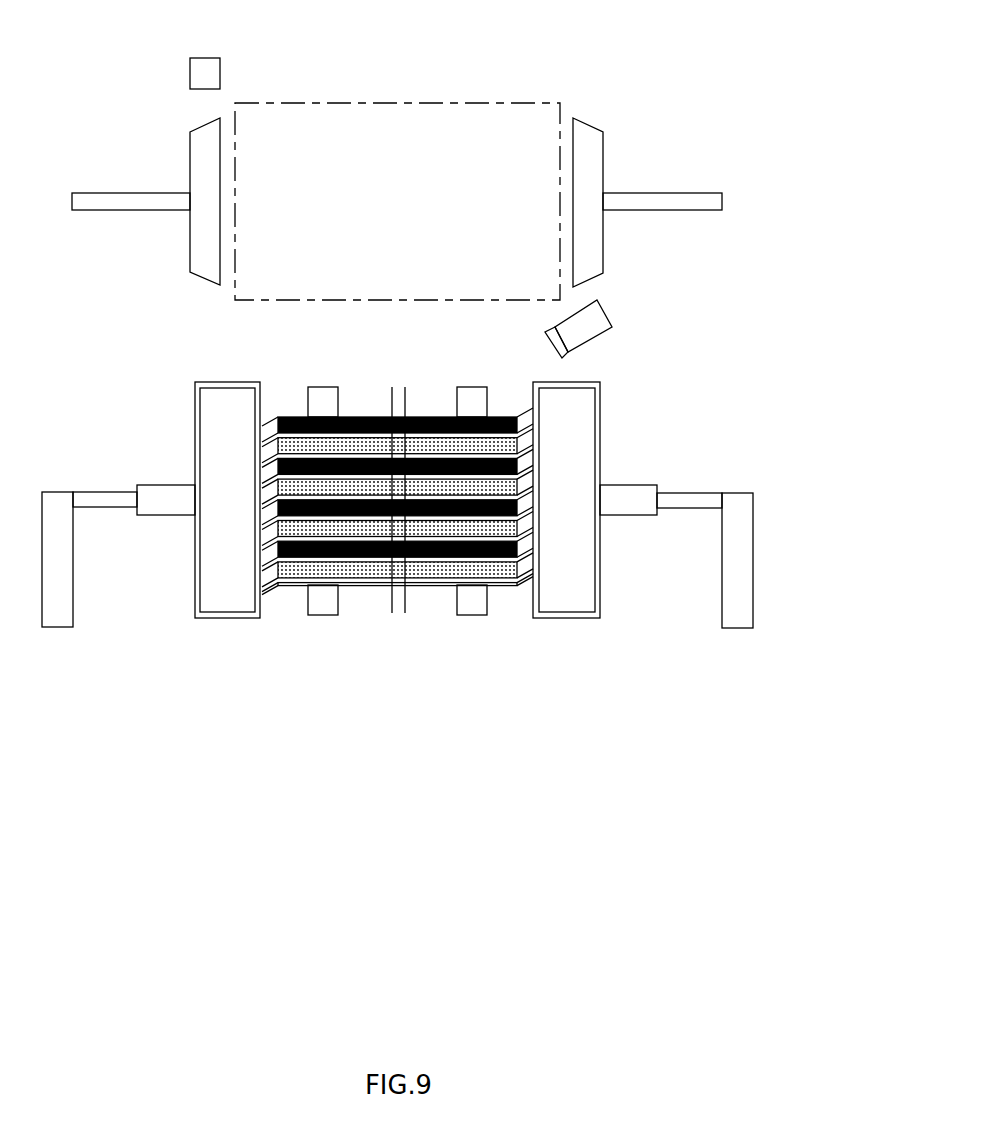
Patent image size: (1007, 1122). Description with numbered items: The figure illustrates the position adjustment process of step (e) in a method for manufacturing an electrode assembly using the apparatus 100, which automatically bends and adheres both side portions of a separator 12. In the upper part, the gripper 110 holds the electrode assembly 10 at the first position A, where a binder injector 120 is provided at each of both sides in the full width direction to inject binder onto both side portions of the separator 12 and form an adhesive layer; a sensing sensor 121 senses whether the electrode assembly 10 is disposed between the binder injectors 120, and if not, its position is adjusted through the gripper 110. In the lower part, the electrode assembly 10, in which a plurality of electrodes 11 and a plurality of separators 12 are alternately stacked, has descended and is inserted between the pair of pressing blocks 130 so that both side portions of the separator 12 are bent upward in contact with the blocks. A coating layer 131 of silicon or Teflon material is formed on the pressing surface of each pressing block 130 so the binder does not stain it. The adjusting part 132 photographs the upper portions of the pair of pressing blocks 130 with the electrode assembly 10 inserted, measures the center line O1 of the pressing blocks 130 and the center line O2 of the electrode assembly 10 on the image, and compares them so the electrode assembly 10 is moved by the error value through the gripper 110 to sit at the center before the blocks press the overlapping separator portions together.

The first position A is at (252, 300).
The electrode assembly 10 is at (399, 464).
The electrode 11 is at (497, 417).
The separator 12 is at (523, 424).
The apparatus for manufacturing an electrode assembly 100 is at (625, 700).
The gripper 110 is at (470, 386).
The binder injector 120 is at (590, 118).
The sensing sensor 121 is at (205, 58).
The pressing block 130 is at (600, 586).
The coating layer 131 is at (225, 619).
The adjusting part 132 is at (607, 307).
The center line of the pair of pressing blocks O1 is at (386, 512).
The center line of the electrode assembly O2 is at (411, 512).